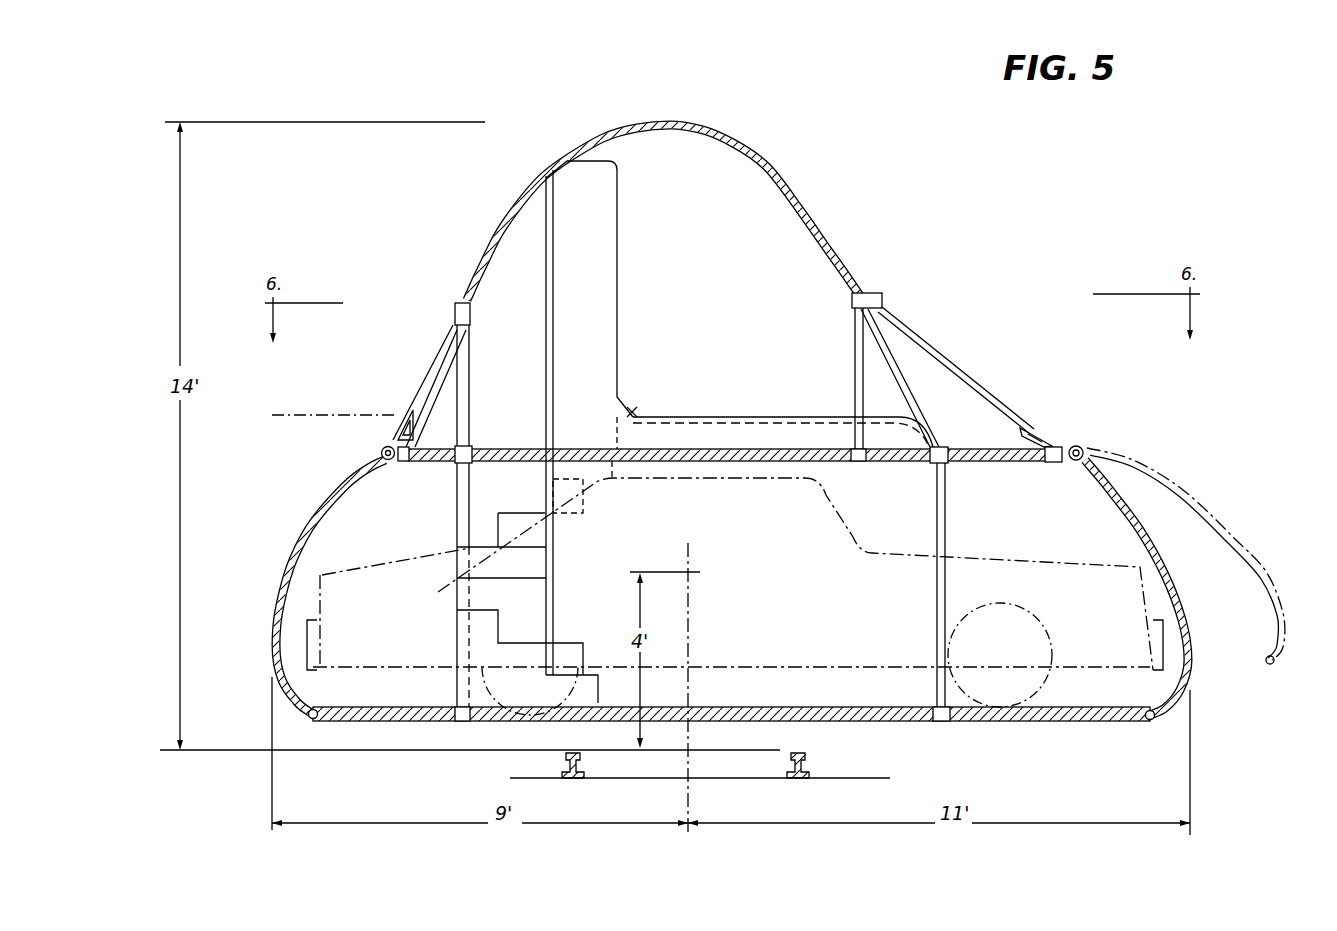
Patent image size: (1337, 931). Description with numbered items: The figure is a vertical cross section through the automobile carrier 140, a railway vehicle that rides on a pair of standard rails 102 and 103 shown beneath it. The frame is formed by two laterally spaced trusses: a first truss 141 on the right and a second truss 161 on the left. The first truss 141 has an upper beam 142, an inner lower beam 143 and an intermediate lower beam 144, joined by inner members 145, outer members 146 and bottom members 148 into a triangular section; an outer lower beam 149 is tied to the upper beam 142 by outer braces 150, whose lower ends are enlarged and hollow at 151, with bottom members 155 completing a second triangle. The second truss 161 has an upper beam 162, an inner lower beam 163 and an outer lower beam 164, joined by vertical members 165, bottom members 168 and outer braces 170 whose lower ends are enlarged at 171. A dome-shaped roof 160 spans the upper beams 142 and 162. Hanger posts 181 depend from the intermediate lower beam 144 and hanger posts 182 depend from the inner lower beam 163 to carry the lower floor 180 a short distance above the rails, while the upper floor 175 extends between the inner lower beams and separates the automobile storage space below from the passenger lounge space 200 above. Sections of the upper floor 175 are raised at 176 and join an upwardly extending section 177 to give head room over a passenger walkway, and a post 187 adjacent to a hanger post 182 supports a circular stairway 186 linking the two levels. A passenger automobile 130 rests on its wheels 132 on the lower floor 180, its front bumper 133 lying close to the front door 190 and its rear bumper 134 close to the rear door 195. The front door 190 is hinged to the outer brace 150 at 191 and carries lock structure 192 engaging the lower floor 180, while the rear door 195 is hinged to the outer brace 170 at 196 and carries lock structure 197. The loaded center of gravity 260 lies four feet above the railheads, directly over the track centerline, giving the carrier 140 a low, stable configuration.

The rail 102 is at (807, 763).
The rail 103 is at (562, 762).
The passenger automobile 130 is at (385, 563).
The wheel 132 is at (1057, 707).
The front bumper 133 is at (1170, 625).
The rear bumper 134 is at (268, 645).
The automobile carrier 140 is at (441, 88).
The first truss 141 is at (913, 363).
The upper beam 142 is at (852, 300).
The inner lower beam 143 is at (858, 461).
The intermediate lower beam 144 is at (948, 462).
The inner member 145 is at (855, 370).
The outer member 146 is at (921, 394).
The bottom member 148 is at (903, 461).
The outer lower beam 149 is at (1055, 462).
The outer brace 150 is at (1000, 397).
The enlarged hollow lower end 151 is at (1052, 430).
The bottom member 155 is at (1013, 461).
The dome-shaped roof 160 is at (750, 150).
The second truss 161 is at (468, 360).
The upper beam 162 is at (452, 317).
The inner lower beam 163 is at (465, 442).
The outer lower beam 164 is at (403, 461).
The vertically arranged member 165 is at (467, 393).
The bottom member 168 is at (436, 388).
The outer brace 170 is at (427, 373).
The enlarged hollow lower end 171 is at (397, 420).
The upper floor 175 is at (718, 461).
The raised section 176 is at (700, 425).
The upwardly extending section 177 is at (633, 405).
The lower floor 180 is at (747, 708).
The hanger post 181 is at (943, 528).
The hanger post 182 is at (457, 527).
The circular stairway 186 is at (490, 593).
The post 187 is at (553, 362).
The front door 190 is at (1177, 562).
The hinge connection 191 is at (1087, 447).
The lock structure 192 is at (1152, 720).
The rear door 195 is at (290, 549).
The hinge connection 196 is at (383, 447).
The lock structure 197 is at (313, 718).
The passenger lounge space 200 is at (728, 243).
The center of gravity 260 is at (692, 570).